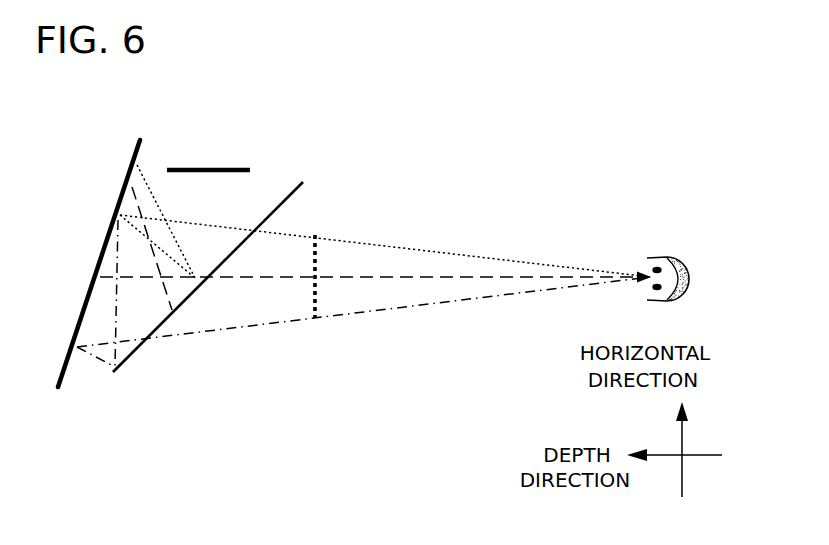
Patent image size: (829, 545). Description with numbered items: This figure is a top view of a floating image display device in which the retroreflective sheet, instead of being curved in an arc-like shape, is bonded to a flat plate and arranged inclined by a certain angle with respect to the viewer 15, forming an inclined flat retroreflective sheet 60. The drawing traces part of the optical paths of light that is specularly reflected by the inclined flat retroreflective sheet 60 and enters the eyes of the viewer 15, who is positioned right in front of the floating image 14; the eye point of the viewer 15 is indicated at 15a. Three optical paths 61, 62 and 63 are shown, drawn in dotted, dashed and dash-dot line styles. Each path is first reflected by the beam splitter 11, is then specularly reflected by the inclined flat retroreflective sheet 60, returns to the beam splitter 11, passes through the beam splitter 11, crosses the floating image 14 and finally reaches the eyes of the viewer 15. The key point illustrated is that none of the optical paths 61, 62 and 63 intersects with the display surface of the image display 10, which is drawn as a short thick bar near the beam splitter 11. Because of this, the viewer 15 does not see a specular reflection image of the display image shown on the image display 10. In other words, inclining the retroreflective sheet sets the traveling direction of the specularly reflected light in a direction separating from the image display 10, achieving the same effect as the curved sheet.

The image display 10 is at (192, 169).
The beam splitter 11 is at (282, 184).
The floating image 14 is at (315, 232).
The viewer 15 is at (674, 260).
The viewpoint of viewer 15a is at (642, 273).
The inclined flat retroreflective sheet 60 is at (97, 238).
The optical path 61 is at (382, 278).
The optical path 62 is at (398, 247).
The optical path 63 is at (482, 298).